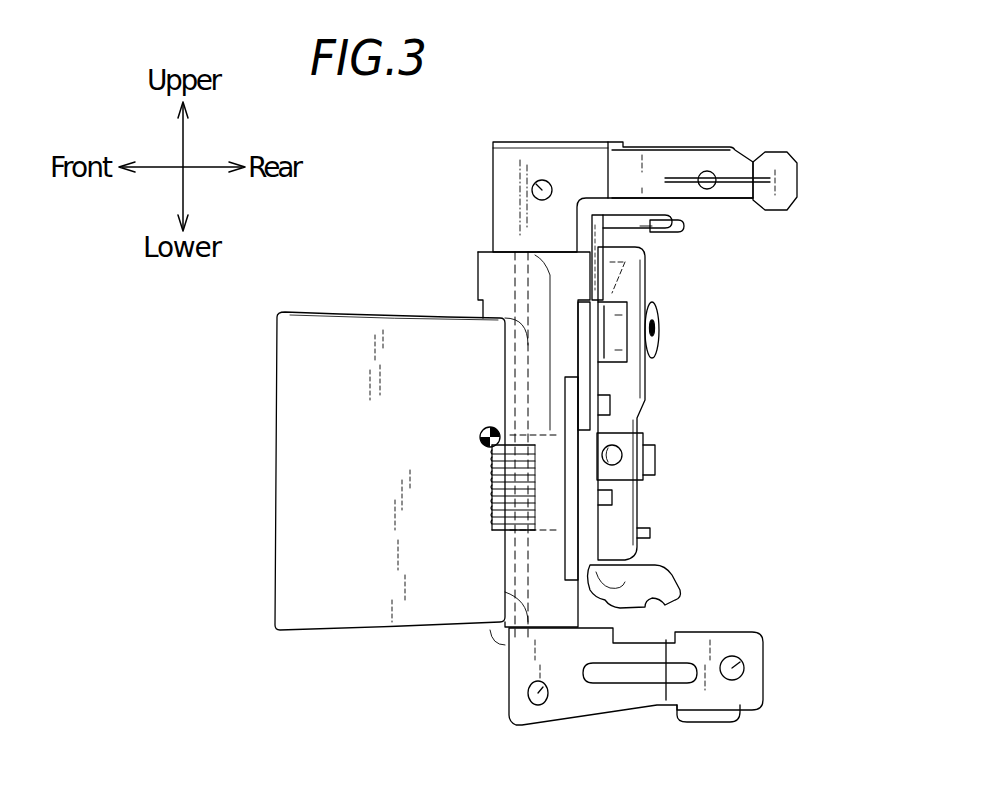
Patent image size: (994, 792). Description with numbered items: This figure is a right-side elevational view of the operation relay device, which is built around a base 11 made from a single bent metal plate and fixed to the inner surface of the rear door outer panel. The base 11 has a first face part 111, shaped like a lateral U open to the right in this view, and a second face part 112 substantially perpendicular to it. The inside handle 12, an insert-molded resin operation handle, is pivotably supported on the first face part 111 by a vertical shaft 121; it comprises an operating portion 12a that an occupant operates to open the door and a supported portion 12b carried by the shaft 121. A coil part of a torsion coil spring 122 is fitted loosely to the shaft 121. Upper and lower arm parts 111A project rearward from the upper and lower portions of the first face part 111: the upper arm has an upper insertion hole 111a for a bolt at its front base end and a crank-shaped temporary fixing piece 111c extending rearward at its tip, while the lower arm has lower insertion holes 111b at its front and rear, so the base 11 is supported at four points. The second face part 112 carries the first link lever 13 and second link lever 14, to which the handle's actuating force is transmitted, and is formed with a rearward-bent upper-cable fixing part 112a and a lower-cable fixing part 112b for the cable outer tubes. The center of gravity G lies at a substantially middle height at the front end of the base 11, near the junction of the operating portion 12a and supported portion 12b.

The base 11 is at (490, 162).
The first face part 111 is at (508, 660).
The upper insertion hole 111a is at (545, 180).
The arm part 111A is at (700, 141).
The lower insertion hole 111b is at (742, 672).
The temporary fixing piece 111c is at (790, 152).
The inside handle 12 is at (305, 310).
The operating portion 12a is at (380, 318).
The supported portion 12b is at (548, 252).
The shaft 121 is at (510, 285).
The torsion coil spring 122 is at (545, 498).
The first link lever 13 is at (618, 253).
The second link lever 14 is at (661, 325).
The second face part 112 is at (648, 393).
The upper-cable fixing part 112a is at (690, 225).
The lower-cable fixing part 112b is at (678, 592).
The center of gravity G is at (480, 437).